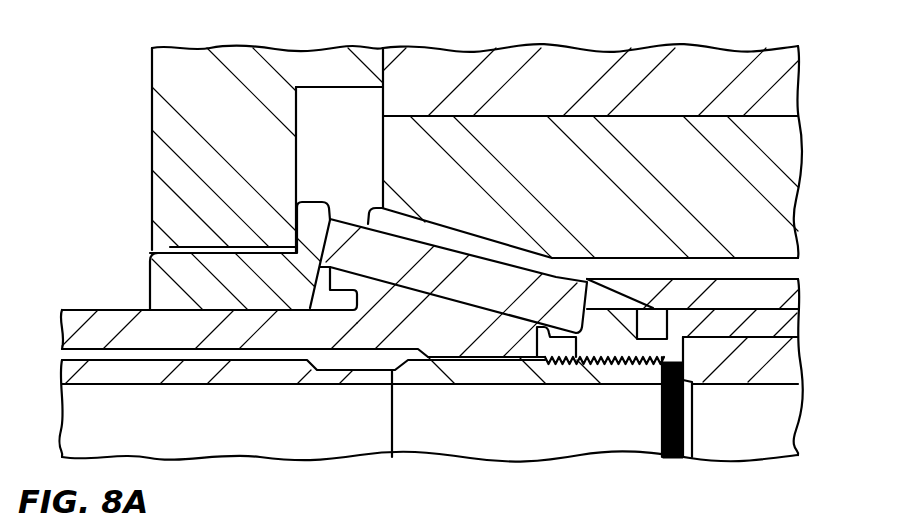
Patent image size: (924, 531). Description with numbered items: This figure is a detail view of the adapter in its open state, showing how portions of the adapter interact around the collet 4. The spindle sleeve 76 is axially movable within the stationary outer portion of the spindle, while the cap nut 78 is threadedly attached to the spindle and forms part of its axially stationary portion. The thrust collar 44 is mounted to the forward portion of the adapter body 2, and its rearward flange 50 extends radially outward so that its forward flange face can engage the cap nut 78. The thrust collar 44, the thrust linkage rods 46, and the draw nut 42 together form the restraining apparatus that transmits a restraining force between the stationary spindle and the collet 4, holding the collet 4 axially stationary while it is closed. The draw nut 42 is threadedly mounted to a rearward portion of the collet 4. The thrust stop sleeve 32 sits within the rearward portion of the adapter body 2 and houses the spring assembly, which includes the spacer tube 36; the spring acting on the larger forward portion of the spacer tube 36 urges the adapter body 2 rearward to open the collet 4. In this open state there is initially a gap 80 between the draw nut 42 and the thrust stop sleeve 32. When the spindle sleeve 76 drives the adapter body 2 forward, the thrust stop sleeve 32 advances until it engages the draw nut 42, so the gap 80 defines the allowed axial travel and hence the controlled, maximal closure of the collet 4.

The adapter body 2 is at (125, 340).
The collet 4 is at (105, 372).
The thrust stop sleeve 32 is at (707, 323).
The spacer tube 36 is at (750, 367).
The draw nut 42 is at (612, 333).
The thrust collar 44 is at (165, 287).
The thrust linkage rods 46 is at (385, 272).
The rearward flange 50 is at (312, 213).
The spindle sleeve 76 is at (545, 153).
The cap nut 78 is at (165, 203).
The gap 80 is at (653, 322).